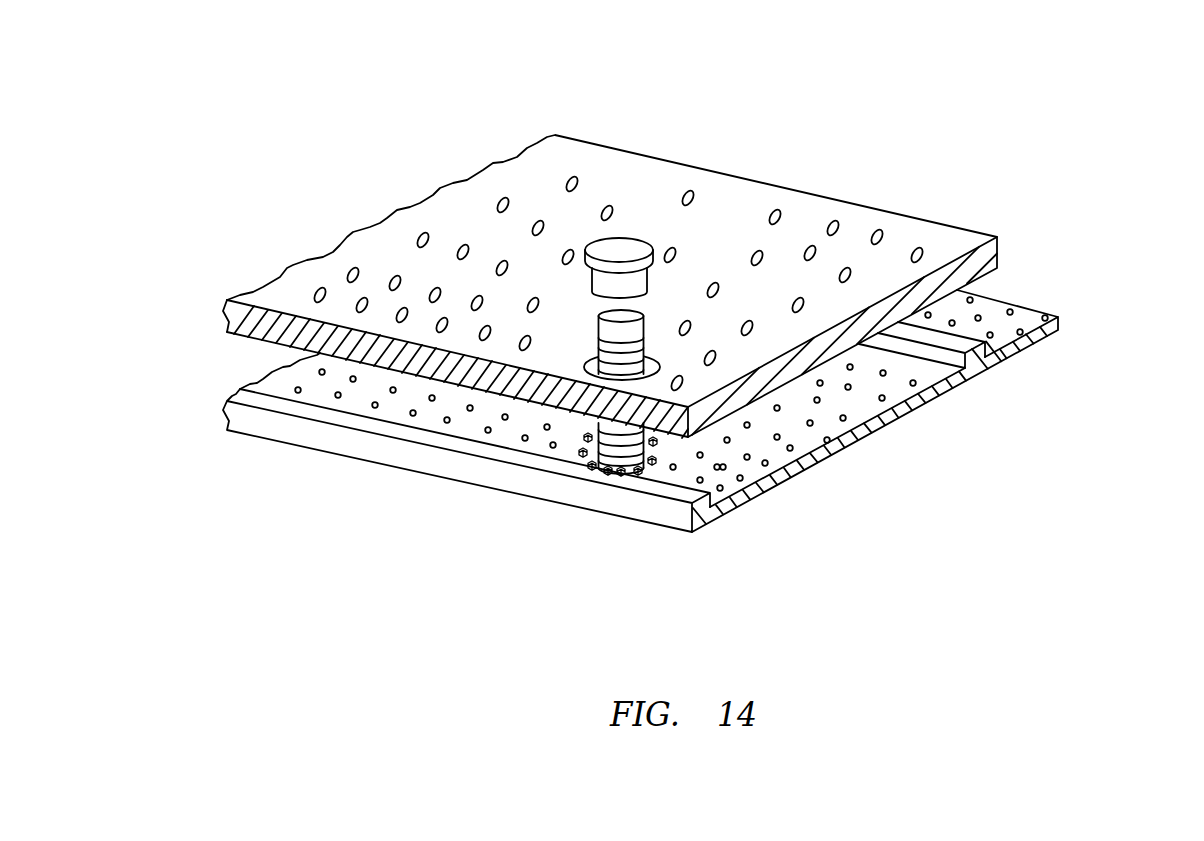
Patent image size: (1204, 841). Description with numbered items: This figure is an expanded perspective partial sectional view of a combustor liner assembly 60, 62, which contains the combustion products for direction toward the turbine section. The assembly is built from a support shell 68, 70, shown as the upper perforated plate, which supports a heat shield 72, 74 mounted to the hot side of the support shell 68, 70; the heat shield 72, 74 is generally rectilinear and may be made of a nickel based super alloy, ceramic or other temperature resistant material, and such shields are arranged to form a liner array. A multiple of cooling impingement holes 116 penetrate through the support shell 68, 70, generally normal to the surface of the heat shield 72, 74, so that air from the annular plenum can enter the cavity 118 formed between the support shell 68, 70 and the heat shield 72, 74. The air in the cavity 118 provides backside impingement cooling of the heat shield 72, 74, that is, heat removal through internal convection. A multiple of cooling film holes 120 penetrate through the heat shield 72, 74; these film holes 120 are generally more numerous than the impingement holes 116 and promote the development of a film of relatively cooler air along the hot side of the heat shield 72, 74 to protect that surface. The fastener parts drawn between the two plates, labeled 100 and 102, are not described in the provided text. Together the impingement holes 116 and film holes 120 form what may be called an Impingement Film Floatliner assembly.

The combustor liner assembly 60 is at (702, 295).
The combustor liner assembly 62 is at (977, 121).
The support shell 68 is at (652, 283).
The support shell 70 is at (933, 201).
The heat shield 72 is at (702, 394).
The heat shield 74 is at (1022, 297).
The fastener shank 100 is at (633, 322).
The fastener head 102 is at (634, 248).
The cooling impingement holes 116 is at (423, 237).
The cavities 118 is at (853, 402).
The cooling film holes 120 is at (790, 448).